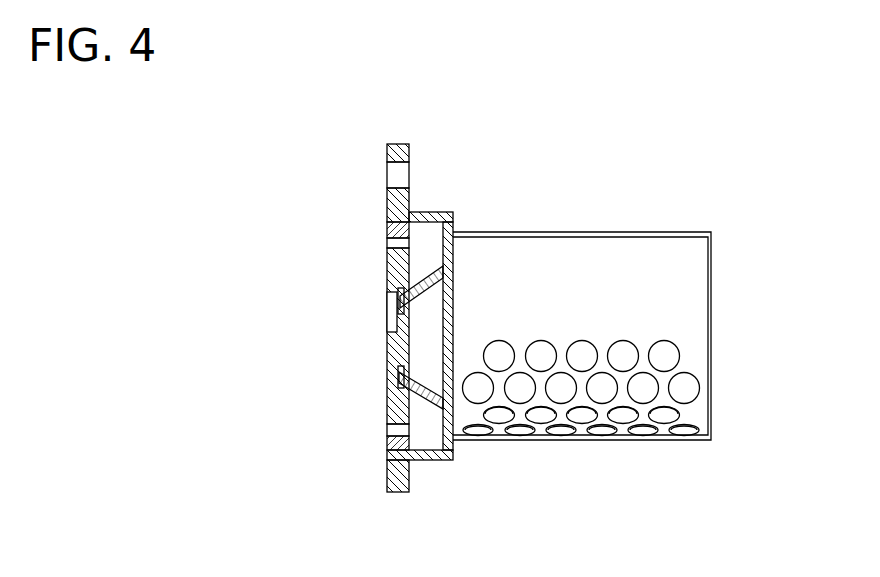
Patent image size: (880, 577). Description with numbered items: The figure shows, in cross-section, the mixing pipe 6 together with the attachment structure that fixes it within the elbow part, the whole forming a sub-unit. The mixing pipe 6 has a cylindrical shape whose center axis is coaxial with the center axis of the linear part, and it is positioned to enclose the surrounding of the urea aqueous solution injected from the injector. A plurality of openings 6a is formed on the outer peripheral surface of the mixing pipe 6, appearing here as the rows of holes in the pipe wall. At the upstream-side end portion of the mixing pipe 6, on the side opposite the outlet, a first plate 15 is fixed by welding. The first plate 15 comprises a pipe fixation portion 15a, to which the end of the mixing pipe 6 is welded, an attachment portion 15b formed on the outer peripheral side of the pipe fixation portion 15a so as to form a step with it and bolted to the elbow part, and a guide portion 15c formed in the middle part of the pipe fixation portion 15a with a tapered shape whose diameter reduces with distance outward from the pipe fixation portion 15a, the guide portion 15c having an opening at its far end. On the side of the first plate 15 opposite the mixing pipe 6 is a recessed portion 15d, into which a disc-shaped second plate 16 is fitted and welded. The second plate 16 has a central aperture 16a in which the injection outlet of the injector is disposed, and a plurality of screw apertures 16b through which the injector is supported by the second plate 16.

The mixing pipe 6 is at (692, 231).
The openings 6a is at (690, 378).
The first plate 15 is at (416, 156).
The pipe fixation portion 15a is at (453, 218).
The attachment portion 15b is at (387, 202).
The guide portion 15c is at (447, 291).
The recessed portion 15d is at (433, 450).
The second plate 16 is at (382, 391).
The aperture 16a is at (387, 328).
The screw apertures 16b is at (388, 426).